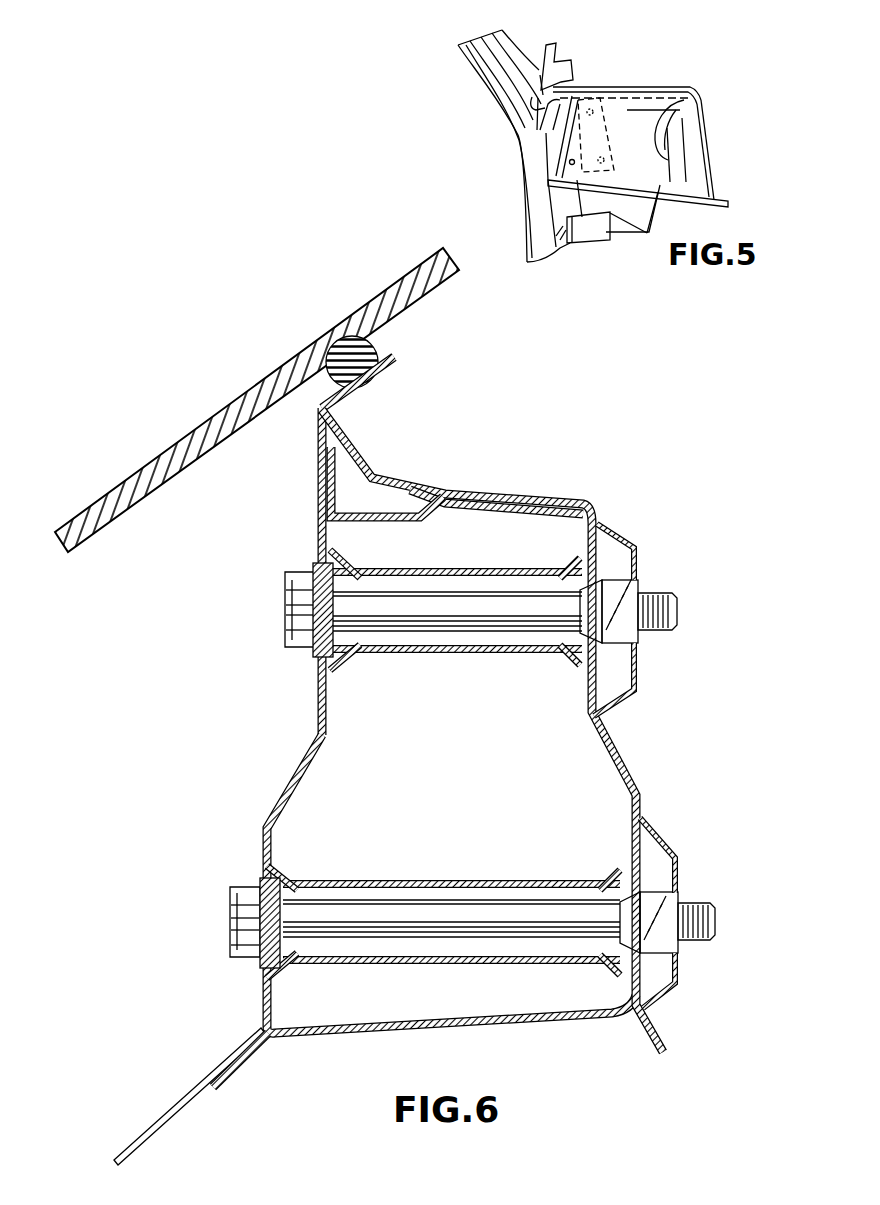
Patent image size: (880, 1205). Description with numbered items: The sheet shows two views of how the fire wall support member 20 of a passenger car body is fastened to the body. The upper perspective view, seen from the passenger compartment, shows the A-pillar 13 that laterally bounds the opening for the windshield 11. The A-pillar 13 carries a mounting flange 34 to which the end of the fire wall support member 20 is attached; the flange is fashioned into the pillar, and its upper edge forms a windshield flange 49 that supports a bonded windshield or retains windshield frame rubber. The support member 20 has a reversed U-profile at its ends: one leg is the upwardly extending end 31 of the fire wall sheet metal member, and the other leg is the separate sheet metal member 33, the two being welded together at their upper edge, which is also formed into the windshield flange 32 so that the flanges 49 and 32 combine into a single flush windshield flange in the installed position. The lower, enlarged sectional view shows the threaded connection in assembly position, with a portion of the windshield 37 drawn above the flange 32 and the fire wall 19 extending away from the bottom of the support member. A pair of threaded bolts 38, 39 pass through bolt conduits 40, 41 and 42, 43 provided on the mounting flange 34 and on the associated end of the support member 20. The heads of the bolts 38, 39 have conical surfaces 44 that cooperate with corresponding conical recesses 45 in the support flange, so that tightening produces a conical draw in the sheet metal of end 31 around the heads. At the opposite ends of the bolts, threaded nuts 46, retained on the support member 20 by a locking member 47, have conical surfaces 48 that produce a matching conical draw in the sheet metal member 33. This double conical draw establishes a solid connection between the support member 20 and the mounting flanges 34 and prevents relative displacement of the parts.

In FIG. 5, the A-pillar 13 is at (518, 48).
In FIG. 5, the bolt conduit 40 is at (534, 85).
In FIG. 6, the bolt conduit 40 is at (437, 650).
In FIG. 5, the windshield flange 49 is at (568, 92).
In FIG. 5, the opening for the windshield 11 is at (640, 69).
In FIG. 5, the sheet metal member 33 is at (654, 128).
In FIG. 6, the sheet metal member 33 is at (486, 492).
In FIG. 5, the windshield flange 32 is at (692, 95).
In FIG. 6, the windshield flange 32 is at (370, 390).
In FIG. 5, the upwardly extending end 31 is at (706, 125).
In FIG. 6, the upwardly extending end 31 is at (294, 762).
In FIG. 5, the mounting flange 34 is at (521, 144).
In FIG. 6, the mounting flange 34 is at (495, 474).
In FIG. 5, the bolt conduit 41 is at (577, 178).
In FIG. 6, the bolt conduit 41 is at (456, 882).
In FIG. 5, the fire wall support member 20 is at (673, 201).
In FIG. 6, the fire wall support member 20 is at (381, 571).
In FIG. 6, the windshield 37 is at (237, 397).
In FIG. 6, the threaded nut 46 is at (609, 580).
In FIG. 6, the locking member 47 is at (638, 562).
In FIG. 6, the threaded bolt 38 is at (656, 597).
In FIG. 6, the bolt conduit 42 is at (312, 572).
In FIG. 6, the conical recess 45 is at (362, 591).
In FIG. 6, the conical surface 44 is at (318, 660).
In FIG. 6, the conical surface 48 is at (633, 683).
In FIG. 6, the threaded bolt 39 is at (703, 900).
In FIG. 6, the bolt conduit 43 is at (261, 958).
In FIG. 6, the fire wall 19 is at (178, 1096).